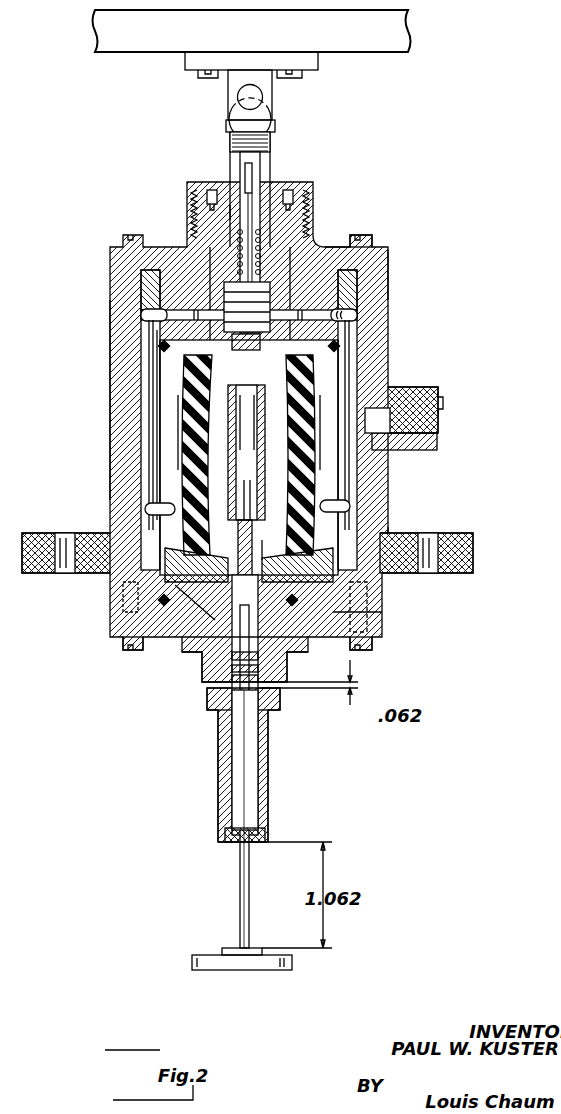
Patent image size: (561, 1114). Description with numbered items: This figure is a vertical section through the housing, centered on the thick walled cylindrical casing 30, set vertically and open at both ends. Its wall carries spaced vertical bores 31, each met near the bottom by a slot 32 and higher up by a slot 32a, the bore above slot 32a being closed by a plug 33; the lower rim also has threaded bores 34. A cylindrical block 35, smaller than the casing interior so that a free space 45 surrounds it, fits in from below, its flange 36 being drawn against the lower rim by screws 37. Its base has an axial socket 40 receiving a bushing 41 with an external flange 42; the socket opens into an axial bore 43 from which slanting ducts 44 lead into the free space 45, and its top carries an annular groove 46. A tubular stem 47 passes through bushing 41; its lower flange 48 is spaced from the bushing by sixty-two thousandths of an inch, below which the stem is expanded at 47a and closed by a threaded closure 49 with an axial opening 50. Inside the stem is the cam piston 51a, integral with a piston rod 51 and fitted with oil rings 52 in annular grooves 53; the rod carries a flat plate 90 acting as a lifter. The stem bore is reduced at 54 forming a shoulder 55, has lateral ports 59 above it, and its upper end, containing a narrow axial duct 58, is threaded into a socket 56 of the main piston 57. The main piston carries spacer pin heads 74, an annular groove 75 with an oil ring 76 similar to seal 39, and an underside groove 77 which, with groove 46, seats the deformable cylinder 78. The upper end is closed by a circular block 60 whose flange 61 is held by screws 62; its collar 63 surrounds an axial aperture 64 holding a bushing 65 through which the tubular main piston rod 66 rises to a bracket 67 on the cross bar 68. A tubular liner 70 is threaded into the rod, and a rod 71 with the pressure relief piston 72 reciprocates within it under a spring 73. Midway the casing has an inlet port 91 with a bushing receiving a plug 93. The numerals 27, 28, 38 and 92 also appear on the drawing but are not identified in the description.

The valve assembly 27 is at (408, 300).
The mounting flange 28 is at (473, 549).
The cylindrical casing 30 is at (110, 388).
The vertical bores 31 is at (358, 382).
The slot 32 is at (348, 505).
The slot 32a is at (357, 315).
The plug 33 is at (141, 285).
The vertical threaded bores 34 is at (370, 598).
The cylindrical block 35 is at (184, 600).
The flange 36 is at (376, 620).
The screws 37 is at (372, 645).
The seal ring 38 is at (160, 600).
The oil ring 39 is at (126, 640).
The axial socket 40 is at (300, 640).
The bushing 41 is at (202, 670).
The external flange 42 is at (258, 658).
The axial bore 43 is at (285, 548).
The upwardly slanting ducts 44 is at (206, 548).
The free space 45 is at (389, 534).
The concentric annular groove 46 is at (165, 535).
The tubular stem 47 is at (290, 410).
The radially expanded portion of stem 47a is at (268, 784).
The flange 48 is at (215, 697).
The closure 49 is at (265, 834).
The axial opening 50 is at (222, 843).
The piston rod 51 is at (250, 886).
The cam piston 51a is at (205, 645).
The oil rings 52 is at (232, 669).
The annular grooves 53 is at (232, 680).
The reduced inner diameter portion 54 is at (234, 441).
The shoulder 55 is at (246, 560).
The socket 56 is at (160, 347).
The main piston 57 is at (149, 340).
The narrow axial duct 58 is at (260, 356).
The lateral ports 59 is at (213, 393).
The circular block 60 is at (320, 247).
The radial flange 61 is at (390, 248).
The screws 62 is at (372, 238).
The collar like structure 63 is at (313, 196).
The axial aperture 64 is at (210, 268).
The bushing 65 is at (311, 213).
The main piston rod 66 is at (230, 212).
The bracket 67 is at (273, 116).
The cross bar 68 is at (357, 42).
The tubular liner 70 is at (253, 178).
The rod 71 is at (255, 205).
The pressure relief piston 72 is at (270, 308).
The spring 73 is at (237, 233).
The pin heads 74 is at (142, 314).
The annular groove 75 is at (340, 350).
The oil ring 76 is at (357, 340).
The concentric annular groove 77 is at (178, 405).
The deformable cylinder 78 is at (150, 470).
The flat plate 90 is at (292, 966).
The inlet port 91 is at (370, 430).
The fitting 92 is at (415, 392).
The plug 93 is at (437, 443).